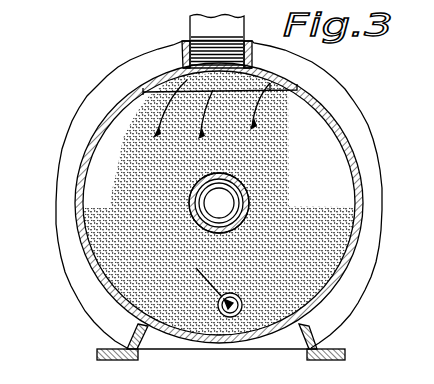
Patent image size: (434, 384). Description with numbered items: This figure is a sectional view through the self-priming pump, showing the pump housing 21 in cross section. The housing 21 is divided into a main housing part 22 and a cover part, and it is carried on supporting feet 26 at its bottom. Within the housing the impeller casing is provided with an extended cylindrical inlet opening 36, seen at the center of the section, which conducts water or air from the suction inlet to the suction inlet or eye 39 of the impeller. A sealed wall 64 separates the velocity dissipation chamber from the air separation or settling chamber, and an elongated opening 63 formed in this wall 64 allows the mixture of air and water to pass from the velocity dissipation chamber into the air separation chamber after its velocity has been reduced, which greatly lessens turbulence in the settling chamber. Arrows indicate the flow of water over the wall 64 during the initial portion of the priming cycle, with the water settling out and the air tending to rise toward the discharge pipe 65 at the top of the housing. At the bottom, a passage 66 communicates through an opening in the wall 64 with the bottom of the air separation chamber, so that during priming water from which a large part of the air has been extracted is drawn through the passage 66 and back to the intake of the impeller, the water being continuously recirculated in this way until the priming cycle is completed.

The discharge pipe 65 is at (191, 19).
The elongated opening 63 is at (296, 79).
The sealed wall 64 is at (334, 128).
The cylindrical inlet opening 36 is at (240, 190).
The suction inlet or eye 39 is at (219, 203).
The pump housing 21 is at (375, 272).
The main housing part 22 is at (93, 275).
The supporting feet 26 is at (104, 349).
The passage 66 is at (233, 317).